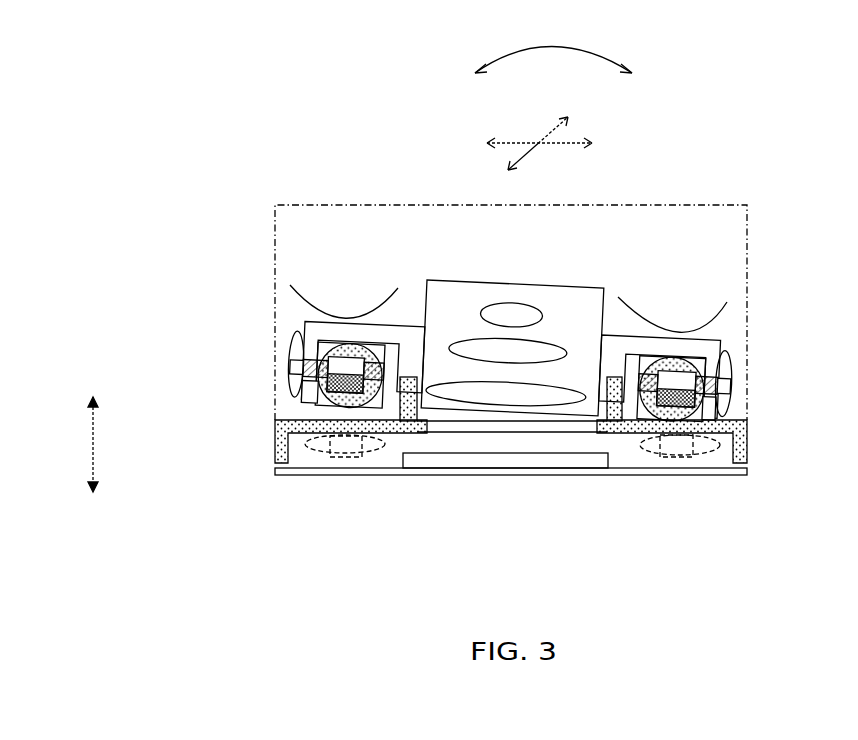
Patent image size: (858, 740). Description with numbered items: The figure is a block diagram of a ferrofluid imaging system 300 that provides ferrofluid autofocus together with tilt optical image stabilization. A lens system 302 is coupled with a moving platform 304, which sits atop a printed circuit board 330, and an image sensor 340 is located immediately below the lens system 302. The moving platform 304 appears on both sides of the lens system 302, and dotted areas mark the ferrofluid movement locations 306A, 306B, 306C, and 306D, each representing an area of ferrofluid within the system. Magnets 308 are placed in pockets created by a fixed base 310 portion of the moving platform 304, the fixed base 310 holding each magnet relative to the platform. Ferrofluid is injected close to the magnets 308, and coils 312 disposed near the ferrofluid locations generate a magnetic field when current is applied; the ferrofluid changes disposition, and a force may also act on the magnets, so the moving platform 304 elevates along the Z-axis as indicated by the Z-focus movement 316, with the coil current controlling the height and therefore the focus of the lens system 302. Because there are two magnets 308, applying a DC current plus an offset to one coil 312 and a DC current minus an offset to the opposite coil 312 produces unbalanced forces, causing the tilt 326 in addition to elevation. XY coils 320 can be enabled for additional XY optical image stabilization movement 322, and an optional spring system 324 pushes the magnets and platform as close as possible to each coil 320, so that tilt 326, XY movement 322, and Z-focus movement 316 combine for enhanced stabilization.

The ferrofluid imaging system 300 is at (528, 623).
The lens system 302 is at (518, 280).
The moving platform 304 is at (406, 324).
The ferrofluid movement location 306A is at (363, 410).
The ferrofluid movement location 306B is at (644, 420).
The ferrofluid movement location 306C is at (276, 437).
The ferrofluid movement location 306D is at (748, 437).
The magnet 308 is at (320, 396).
The fixed base 310 is at (298, 333).
The coil 312 is at (290, 358).
The Z-focus movement 316 is at (95, 406).
The XY coil 320 is at (314, 462).
The XY optical image stabilization movement 322 is at (579, 134).
The spring system 324 is at (336, 280).
The tilt 326 is at (553, 49).
The printed circuit board 330 is at (497, 470).
The image sensor 340 is at (538, 458).